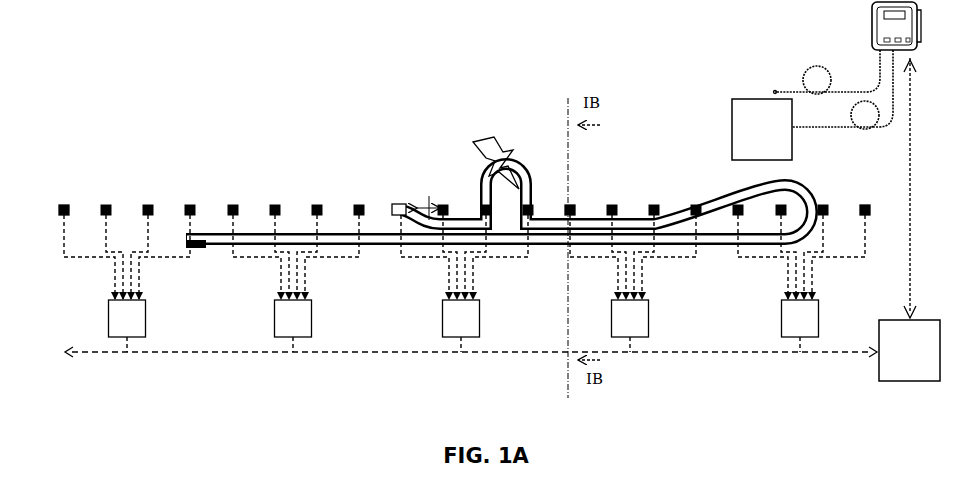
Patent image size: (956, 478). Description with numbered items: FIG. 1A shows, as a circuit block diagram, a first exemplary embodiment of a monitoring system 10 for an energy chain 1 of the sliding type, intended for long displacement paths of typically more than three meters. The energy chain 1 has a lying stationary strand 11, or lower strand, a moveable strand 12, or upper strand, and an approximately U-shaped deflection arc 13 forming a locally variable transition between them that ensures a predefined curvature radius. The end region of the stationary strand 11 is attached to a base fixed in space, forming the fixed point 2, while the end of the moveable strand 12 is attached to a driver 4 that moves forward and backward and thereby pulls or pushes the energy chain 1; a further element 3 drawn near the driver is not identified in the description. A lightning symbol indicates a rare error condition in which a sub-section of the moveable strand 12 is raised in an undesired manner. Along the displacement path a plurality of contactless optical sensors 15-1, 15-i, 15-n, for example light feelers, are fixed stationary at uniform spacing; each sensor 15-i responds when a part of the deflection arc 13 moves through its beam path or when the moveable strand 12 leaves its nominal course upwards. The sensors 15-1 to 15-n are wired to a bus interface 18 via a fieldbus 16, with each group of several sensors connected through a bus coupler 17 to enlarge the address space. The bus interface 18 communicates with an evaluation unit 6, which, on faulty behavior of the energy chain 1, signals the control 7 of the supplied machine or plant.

The monitoring system 10 is at (152, 103).
The energy chain 1 is at (551, 208).
The fixed point 2 is at (200, 236).
The distance 3 is at (428, 207).
The driver 4 is at (395, 201).
The stationary strand 11 is at (499, 180).
The moveable strand 12 is at (499, 183).
The deflection arc 13 is at (741, 183).
The sensor 15-1 is at (65, 204).
The sensor 15-i is at (573, 206).
The sensor 15-n is at (865, 204).
The fieldbus 16 is at (243, 354).
The bus coupler 17 is at (133, 320).
The bus interface 18 is at (890, 368).
The evaluation unit 6 is at (888, 30).
The control 7 is at (752, 112).